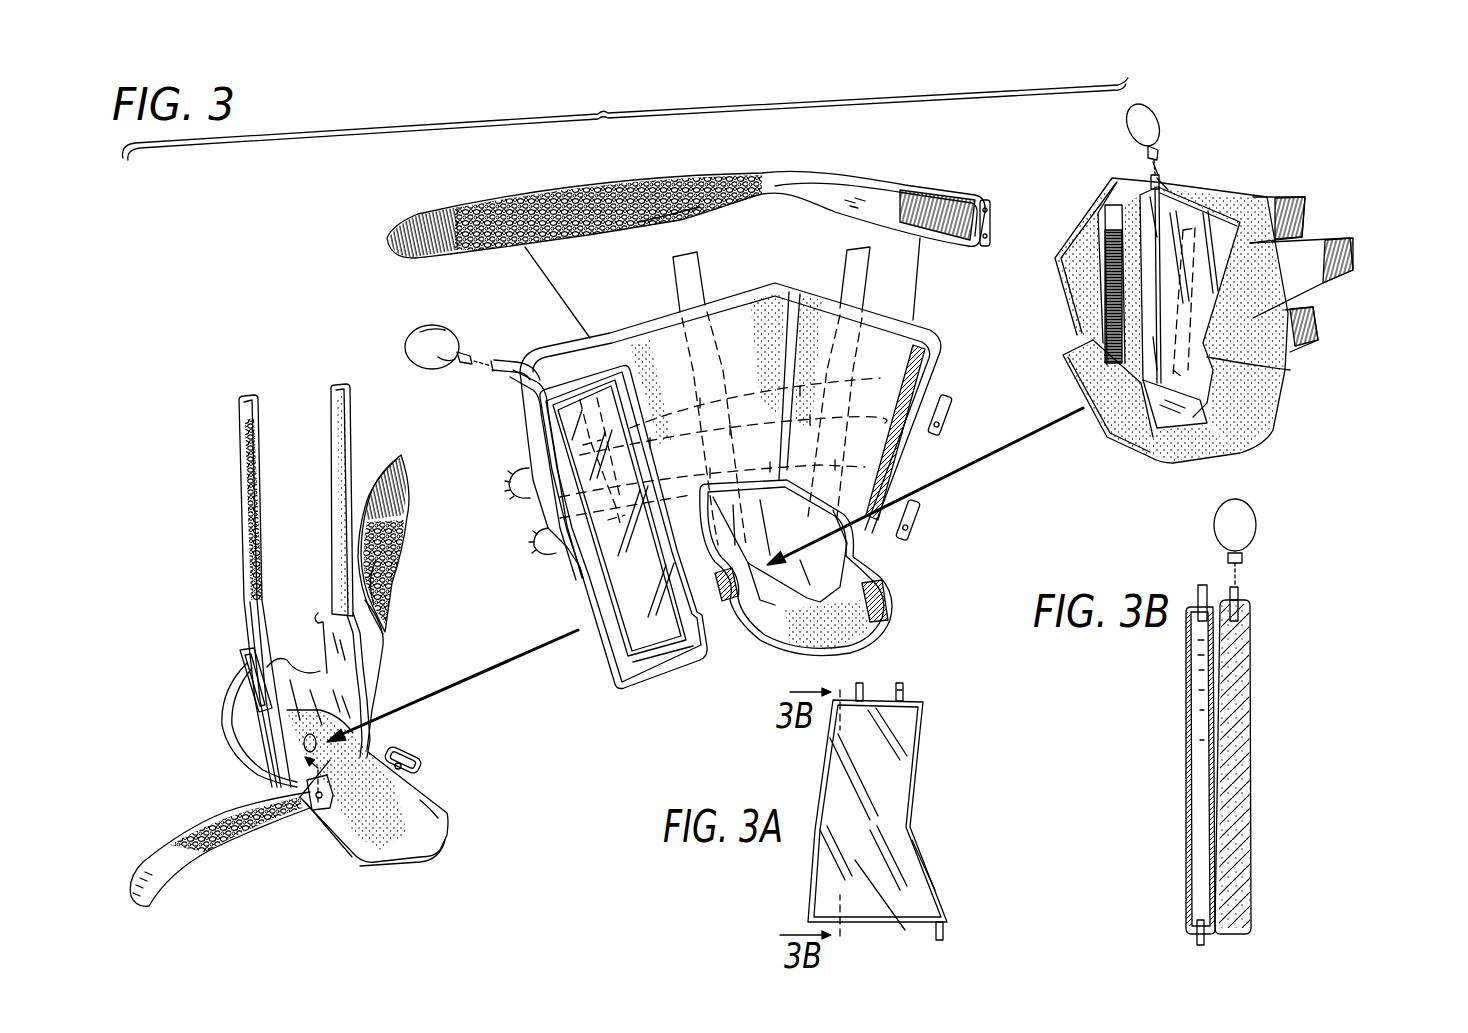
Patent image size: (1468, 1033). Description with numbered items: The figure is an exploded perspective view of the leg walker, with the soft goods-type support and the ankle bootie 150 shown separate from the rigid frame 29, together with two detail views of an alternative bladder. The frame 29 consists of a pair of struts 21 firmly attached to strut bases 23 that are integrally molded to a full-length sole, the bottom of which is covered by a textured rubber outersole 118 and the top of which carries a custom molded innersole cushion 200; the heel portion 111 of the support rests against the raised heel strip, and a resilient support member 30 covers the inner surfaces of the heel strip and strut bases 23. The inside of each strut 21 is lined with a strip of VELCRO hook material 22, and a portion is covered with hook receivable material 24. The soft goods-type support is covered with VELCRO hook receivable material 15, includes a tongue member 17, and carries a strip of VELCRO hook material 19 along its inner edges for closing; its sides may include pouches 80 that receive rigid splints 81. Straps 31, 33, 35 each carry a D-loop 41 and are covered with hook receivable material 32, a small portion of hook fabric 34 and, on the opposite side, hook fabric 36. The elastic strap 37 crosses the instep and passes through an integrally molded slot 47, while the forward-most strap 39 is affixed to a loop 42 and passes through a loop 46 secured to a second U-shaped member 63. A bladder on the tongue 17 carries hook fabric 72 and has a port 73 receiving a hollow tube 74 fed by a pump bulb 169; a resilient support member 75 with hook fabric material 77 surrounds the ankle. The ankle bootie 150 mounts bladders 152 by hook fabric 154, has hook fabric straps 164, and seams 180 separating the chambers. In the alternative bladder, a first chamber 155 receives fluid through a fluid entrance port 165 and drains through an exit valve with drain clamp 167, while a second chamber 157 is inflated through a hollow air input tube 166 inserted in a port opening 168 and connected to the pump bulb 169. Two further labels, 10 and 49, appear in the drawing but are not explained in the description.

In FIG. 3, the wrist support assembly 10 is at (331, 622).
In FIG. 3, the VELCRO hook receivable material 15 is at (1197, 298).
In FIG. 3, the tongue member 17 is at (636, 668).
In FIG. 3, the strip of VELCRO hook material 19 is at (932, 356).
In FIG. 3, the struts 21 is at (240, 403).
In FIG. 3, the strip of VELCRO hook material 22 is at (336, 410).
In FIG. 3, the strut bases 23 is at (257, 747).
In FIG. 3, the VELCRO hook receivable material 24 is at (245, 540).
In FIG. 3, the rigid frame 29 is at (205, 658).
In FIG. 3, the resilient support member 30 is at (335, 692).
In FIG. 3, the strap 31 is at (625, 184).
In FIG. 3, the VELCRO hook receivable material 32 is at (714, 180).
In FIG. 3, the strap 33 is at (877, 380).
In FIG. 3, the VELCRO hook fabric 34 is at (418, 218).
In FIG. 3, the strap 35 is at (860, 465).
In FIG. 3, the VELCRO hook fabric 36 is at (915, 195).
In FIG. 3, the strap 37 is at (395, 592).
In FIG. 3, the forward-most strap 39 is at (250, 832).
In FIG. 3, the D-loop 41 is at (992, 205).
In FIG. 3, the loop 42 is at (340, 838).
In FIG. 3, the loop 46 is at (425, 760).
In FIG. 3, the second integrally molded slot 47 is at (248, 700).
In FIG. 3, the plate edge 49 is at (422, 790).
In FIG. 3, the second U-shaped member 63 is at (407, 735).
In FIG. 3, the VELCRO hook fabric 72 is at (643, 587).
In FIG. 3, the port 73 is at (533, 422).
In FIG. 3, the hollow tube 74 is at (508, 380).
In FIG. 3, the resilient support member 75 is at (805, 608).
In FIG. 3, the VELCRO hook fabric material 77 is at (850, 560).
In FIG. 3, the pouches 80 is at (690, 375).
In FIG. 3, the rigid splints 81 is at (700, 265).
In FIG. 3, the heel portion 111 is at (291, 666).
In FIG. 3, the textured rubber outersole 118 is at (400, 863).
In FIG. 3, the ankle bootie 150 is at (1300, 355).
In FIG. 3, the bladders 152 is at (1100, 215).
In FIG. 3A, the bladders 152 is at (828, 777).
In FIG. 3B, the bladders 152 is at (1185, 770).
In FIG. 3, the VELCRO hook fabric 154 is at (1100, 320).
In FIG. 3B, the first chamber 155 is at (1198, 830).
In FIG. 3B, the second chamber 157 is at (1250, 712).
In FIG. 3, the VELCRO hook fabric straps 164 is at (1303, 215).
In FIG. 3A, the fluid entrance port 165 is at (862, 685).
In FIG. 3B, the fluid entrance port 165 is at (1198, 590).
In FIG. 3, the hollow air input tube 166 is at (1162, 176).
In FIG. 3A, the hollow air input tube 166 is at (900, 685).
In FIG. 3B, the hollow air input tube 166 is at (1240, 592).
In FIG. 3, the exit valve with drain clamp 167 is at (1166, 184).
In FIG. 3A, the exit valve with drain clamp 167 is at (946, 936).
In FIG. 3B, the exit valve with drain clamp 167 is at (1196, 945).
In FIG. 3, the port opening 168 is at (1150, 180).
In FIG. 3A, the port opening 168 is at (903, 695).
In FIG. 3B, the port opening 168 is at (1240, 602).
In FIG. 3, the pump bulb 169 is at (440, 335).
In FIG. 3B, the pump bulb 169 is at (1245, 515).
In FIG. 3, the seams 180 is at (1170, 463).
In FIG. 3, the custom molded innersole cushion 200 is at (433, 800).